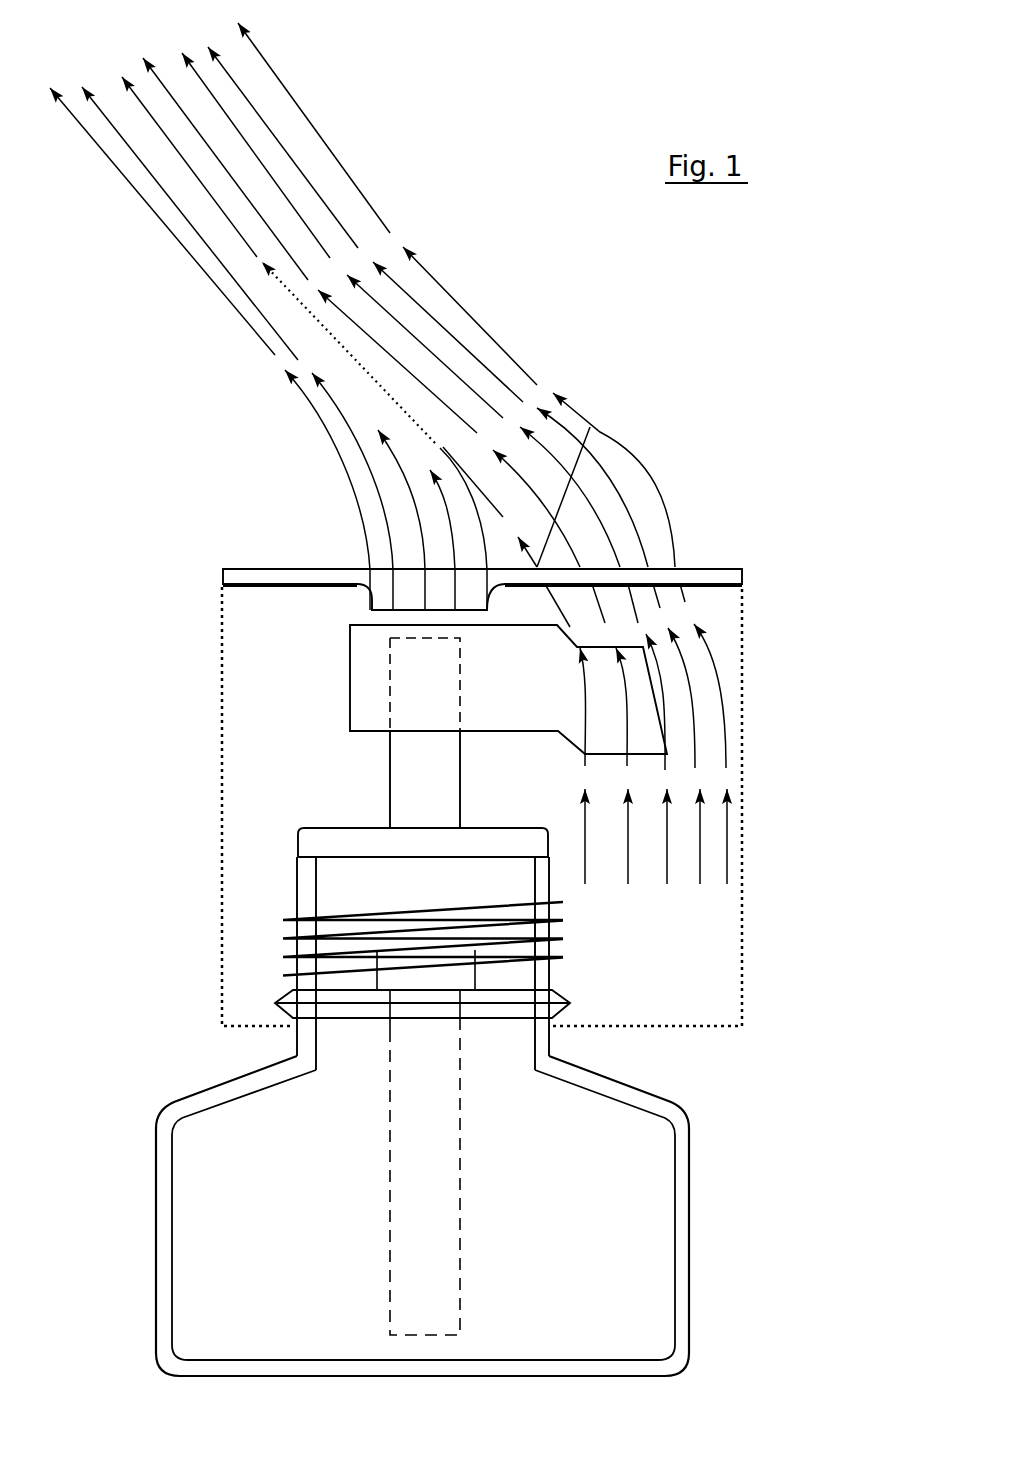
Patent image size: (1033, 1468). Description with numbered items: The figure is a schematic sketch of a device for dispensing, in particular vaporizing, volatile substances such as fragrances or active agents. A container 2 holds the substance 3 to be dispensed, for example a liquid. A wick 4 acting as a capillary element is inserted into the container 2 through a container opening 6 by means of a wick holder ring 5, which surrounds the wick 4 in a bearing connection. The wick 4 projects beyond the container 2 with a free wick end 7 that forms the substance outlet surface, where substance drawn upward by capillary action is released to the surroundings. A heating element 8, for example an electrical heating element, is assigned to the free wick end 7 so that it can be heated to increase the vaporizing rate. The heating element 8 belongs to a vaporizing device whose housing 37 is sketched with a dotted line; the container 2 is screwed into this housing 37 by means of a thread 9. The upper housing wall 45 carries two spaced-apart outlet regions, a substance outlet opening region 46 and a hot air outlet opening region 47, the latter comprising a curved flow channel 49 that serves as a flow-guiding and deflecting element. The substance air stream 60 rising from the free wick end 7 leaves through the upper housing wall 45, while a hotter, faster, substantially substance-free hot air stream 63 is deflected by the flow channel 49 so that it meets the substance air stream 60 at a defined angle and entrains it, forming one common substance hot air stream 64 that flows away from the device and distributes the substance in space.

The container 2 is at (700, 1226).
The substance 3 is at (556, 1238).
The wick 4 is at (425, 787).
The wick holder ring 5 is at (297, 848).
The container opening 6 is at (541, 865).
The free wick end 7 is at (386, 677).
The heating element 8 is at (526, 699).
The thread 9 is at (280, 946).
The housing 37 is at (760, 1013).
The upper housing wall 45 is at (686, 568).
The substance outlet opening region 46 is at (358, 588).
The hot air outlet opening region 47 is at (618, 447).
The flow channel 49 is at (597, 426).
The substance air stream 60 is at (379, 541).
The hot air stream 63 is at (708, 637).
The substance hot air stream 64 is at (388, 210).